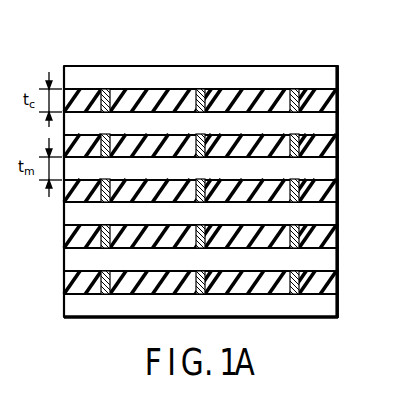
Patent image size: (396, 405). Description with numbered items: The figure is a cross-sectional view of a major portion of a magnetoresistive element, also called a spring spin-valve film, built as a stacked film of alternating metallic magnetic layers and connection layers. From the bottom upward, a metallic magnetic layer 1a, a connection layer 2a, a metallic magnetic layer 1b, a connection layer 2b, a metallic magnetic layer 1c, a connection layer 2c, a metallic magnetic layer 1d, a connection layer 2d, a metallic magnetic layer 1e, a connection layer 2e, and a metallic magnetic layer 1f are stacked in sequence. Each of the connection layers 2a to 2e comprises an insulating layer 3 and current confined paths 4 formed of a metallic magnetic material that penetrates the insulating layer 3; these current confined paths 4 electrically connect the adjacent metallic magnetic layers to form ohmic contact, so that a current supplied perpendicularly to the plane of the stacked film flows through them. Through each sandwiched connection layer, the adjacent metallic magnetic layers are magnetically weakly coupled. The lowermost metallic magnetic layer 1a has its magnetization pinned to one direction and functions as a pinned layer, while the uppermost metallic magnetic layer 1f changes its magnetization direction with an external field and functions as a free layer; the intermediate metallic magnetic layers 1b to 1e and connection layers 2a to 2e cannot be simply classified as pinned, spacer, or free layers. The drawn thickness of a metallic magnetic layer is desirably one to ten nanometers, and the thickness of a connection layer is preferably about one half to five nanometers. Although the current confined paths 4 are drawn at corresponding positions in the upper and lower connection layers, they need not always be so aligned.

The metallic magnetic layer 1a is at (338, 307).
The metallic magnetic layer 1b is at (338, 262).
The metallic magnetic layer 1c is at (338, 217).
The metallic magnetic layer 1d is at (338, 171).
The metallic magnetic layer 1e is at (338, 126).
The metallic magnetic layer 1f is at (338, 80).
The connection layer 2a is at (338, 282).
The connection layer 2b is at (338, 237).
The connection layer 2c is at (338, 190).
The connection layer 2d is at (338, 145).
The connection layer 2e is at (338, 98).
The insulating layer 3 is at (247, 103).
The current confined paths 4 is at (198, 89).